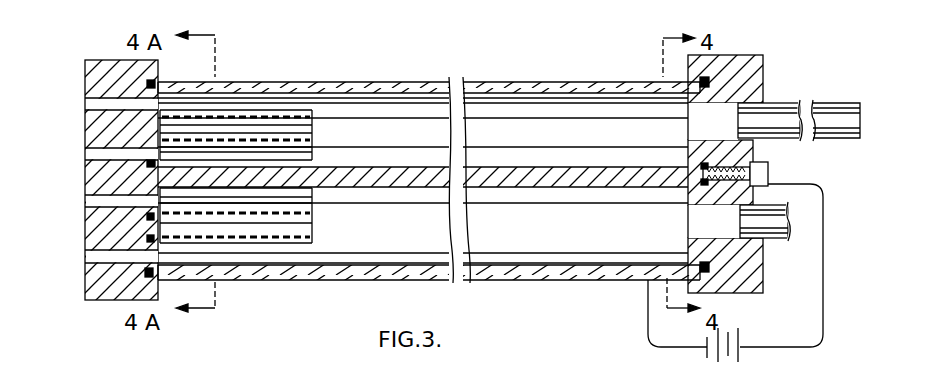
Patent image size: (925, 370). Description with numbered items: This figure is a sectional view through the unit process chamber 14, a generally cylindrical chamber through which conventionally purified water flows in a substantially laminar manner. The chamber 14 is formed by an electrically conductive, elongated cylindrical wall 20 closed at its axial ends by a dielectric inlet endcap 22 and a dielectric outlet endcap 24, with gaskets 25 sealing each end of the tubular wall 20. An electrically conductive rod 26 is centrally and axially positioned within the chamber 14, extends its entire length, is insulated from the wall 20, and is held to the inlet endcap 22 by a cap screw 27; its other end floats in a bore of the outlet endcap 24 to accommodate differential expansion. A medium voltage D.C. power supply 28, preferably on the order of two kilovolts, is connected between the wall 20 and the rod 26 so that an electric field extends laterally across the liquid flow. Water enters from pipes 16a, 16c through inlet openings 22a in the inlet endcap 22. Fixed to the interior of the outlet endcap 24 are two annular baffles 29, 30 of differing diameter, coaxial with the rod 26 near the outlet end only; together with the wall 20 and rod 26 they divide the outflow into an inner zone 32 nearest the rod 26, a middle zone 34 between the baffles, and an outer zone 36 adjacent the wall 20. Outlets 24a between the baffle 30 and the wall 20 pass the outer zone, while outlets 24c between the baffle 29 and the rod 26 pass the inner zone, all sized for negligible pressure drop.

The unit process chamber 14 is at (556, 72).
The inlet pipe 16a is at (817, 108).
The inlet pipe 16c is at (770, 240).
The cylindrical wall 20 is at (360, 80).
The inlet endcap 22 is at (755, 58).
The inlet openings 22a is at (690, 125).
The outlet endcap 24 is at (118, 40).
The outer zone outlets 24a is at (85, 105).
The inner zone outlets 24c is at (85, 153).
The gaskets 25 is at (151, 80).
The elongated rod 26 is at (425, 192).
The cap screw 27 is at (768, 177).
The D.C. power supply 28 is at (742, 349).
The inner annular baffle 29 is at (300, 150).
The outer annular baffle 30 is at (312, 119).
The inner zone 32 is at (353, 199).
The middle zone 34 is at (313, 128).
The outer zone 36 is at (300, 103).